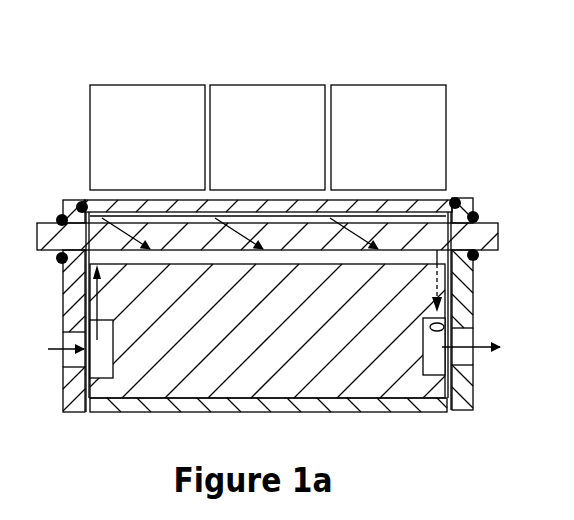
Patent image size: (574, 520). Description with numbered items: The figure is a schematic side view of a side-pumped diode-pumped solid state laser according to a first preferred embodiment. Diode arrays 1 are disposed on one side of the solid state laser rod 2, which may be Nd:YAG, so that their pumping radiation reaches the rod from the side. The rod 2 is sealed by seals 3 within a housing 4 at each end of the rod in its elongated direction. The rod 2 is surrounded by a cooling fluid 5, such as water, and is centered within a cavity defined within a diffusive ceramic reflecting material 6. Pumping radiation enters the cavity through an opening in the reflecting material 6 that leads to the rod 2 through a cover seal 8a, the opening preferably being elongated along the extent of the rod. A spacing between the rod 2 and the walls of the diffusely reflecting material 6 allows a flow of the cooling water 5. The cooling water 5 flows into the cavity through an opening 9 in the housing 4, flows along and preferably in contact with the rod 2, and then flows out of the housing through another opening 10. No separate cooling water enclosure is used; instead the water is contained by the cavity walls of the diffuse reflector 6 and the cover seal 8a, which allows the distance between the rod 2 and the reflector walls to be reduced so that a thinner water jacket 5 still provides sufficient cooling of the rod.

The diode arrays 1 is at (148, 85).
The solid state laser rod 2 is at (497, 221).
The seals 3 is at (61, 215).
The housing 4 is at (63, 287).
The cooling fluid 5 is at (381, 217).
The diffusive ceramic reflecting material 6 is at (398, 287).
The cover seal 8a is at (452, 197).
The opening 9 is at (56, 357).
The another opening 10 is at (475, 357).